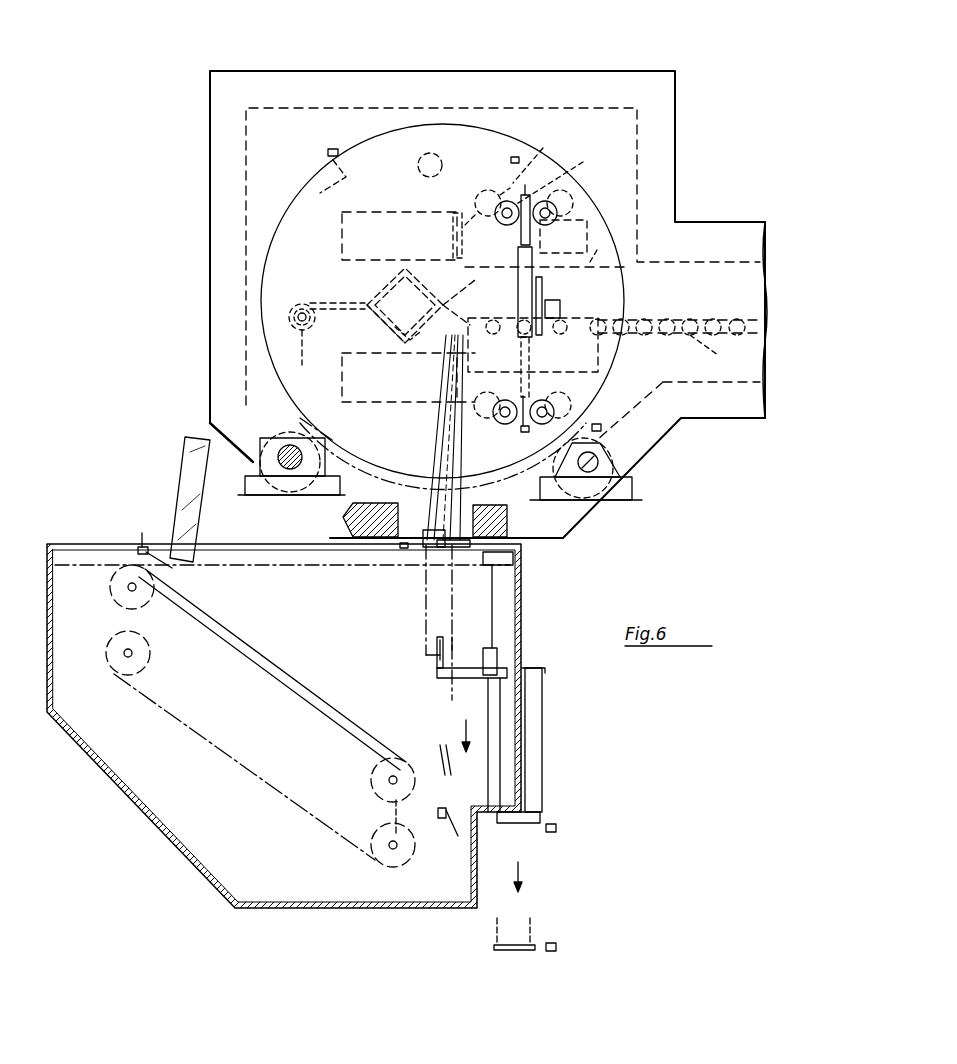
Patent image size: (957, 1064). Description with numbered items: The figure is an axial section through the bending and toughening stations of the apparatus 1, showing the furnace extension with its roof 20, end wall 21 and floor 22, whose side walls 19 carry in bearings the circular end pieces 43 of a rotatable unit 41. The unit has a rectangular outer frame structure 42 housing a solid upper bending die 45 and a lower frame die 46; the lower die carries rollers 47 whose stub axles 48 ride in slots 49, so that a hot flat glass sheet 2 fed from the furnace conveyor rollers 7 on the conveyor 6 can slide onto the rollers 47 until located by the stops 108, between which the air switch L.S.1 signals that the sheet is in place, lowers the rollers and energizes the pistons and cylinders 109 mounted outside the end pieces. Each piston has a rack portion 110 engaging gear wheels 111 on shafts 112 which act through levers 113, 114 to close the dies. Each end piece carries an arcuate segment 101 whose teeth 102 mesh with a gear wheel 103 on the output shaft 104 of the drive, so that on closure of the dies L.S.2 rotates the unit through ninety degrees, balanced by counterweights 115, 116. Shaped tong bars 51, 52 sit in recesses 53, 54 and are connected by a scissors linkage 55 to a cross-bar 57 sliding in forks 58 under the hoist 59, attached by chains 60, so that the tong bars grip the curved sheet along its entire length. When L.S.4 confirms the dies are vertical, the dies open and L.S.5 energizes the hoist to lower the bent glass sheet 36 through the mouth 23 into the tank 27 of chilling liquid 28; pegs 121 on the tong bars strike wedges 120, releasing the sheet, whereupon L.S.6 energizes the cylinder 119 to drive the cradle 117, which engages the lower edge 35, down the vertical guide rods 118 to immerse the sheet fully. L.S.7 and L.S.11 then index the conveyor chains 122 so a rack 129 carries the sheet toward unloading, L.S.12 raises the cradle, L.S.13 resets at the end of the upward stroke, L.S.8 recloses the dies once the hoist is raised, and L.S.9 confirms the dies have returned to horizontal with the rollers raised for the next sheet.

The machine 1 is at (712, 214).
The glass sheet 2 is at (700, 318).
The conveyor 6 is at (751, 240).
The rollers 7 is at (711, 350).
The side walls 19 is at (585, 125).
The roof 20 is at (307, 69).
The end wall 21 is at (210, 297).
The floor 22 is at (345, 520).
The mouth 23 is at (403, 548).
The tank 27 is at (122, 795).
The chilling liquid 28 is at (97, 560).
The lower edge 35 is at (430, 654).
The bent glass sheet 36 is at (426, 620).
The rotatable unit 41 is at (296, 206).
The outer frame structure 42 is at (588, 240).
The circular end pieces 43 is at (375, 146).
The upper bending die 45 is at (612, 276).
The lower bending die 46 is at (614, 367).
The rollers 47 is at (572, 306).
The stub axles 48 is at (549, 343).
The slots 49 is at (590, 426).
The tong bar 51 is at (503, 225).
The tong bar 52 is at (440, 377).
The recess 53 is at (455, 242).
The recess 54 is at (462, 452).
The scissors linkage 55 is at (386, 286).
The cross-bar 57 is at (364, 320).
The forks 58 is at (345, 292).
The hoist 59 is at (294, 339).
The chains 60 is at (306, 275).
The arcuate segment 101 is at (375, 468).
The teeth 102 is at (283, 428).
The gear wheel 103 is at (270, 432).
The output shaft 104 is at (292, 468).
The stops 108 is at (448, 288).
The pistons and cylinders 109 is at (520, 288).
The rack portion 110 is at (557, 277).
The gear wheels 111 is at (575, 187).
The shafts 112 is at (550, 212).
The lever 113 is at (511, 160).
The lever 114 is at (482, 210).
The counterweight 115 is at (405, 212).
The counterweight 116 is at (348, 380).
The cradle 117 is at (437, 662).
The vertical guide rods 118 is at (487, 697).
The cylinder 119 is at (540, 698).
The wedge 120 is at (462, 550).
The pegs 121 is at (460, 500).
The conveyor chains 122 is at (380, 790).
The racks 129 is at (440, 748).
The air switch L.S.1 is at (421, 339).
The switch L.S.2 is at (546, 153).
The switch L.S.4 is at (328, 153).
The switch L.S.5 is at (567, 176).
The switch L.S.6 is at (426, 610).
The switch L.S.7 is at (556, 946).
The switch L.S.8 is at (310, 312).
The switch L.S.9 is at (601, 428).
The switch L.S.11 is at (456, 829).
The switch L.S.12 is at (145, 539).
The switch L.S.13 is at (556, 830).